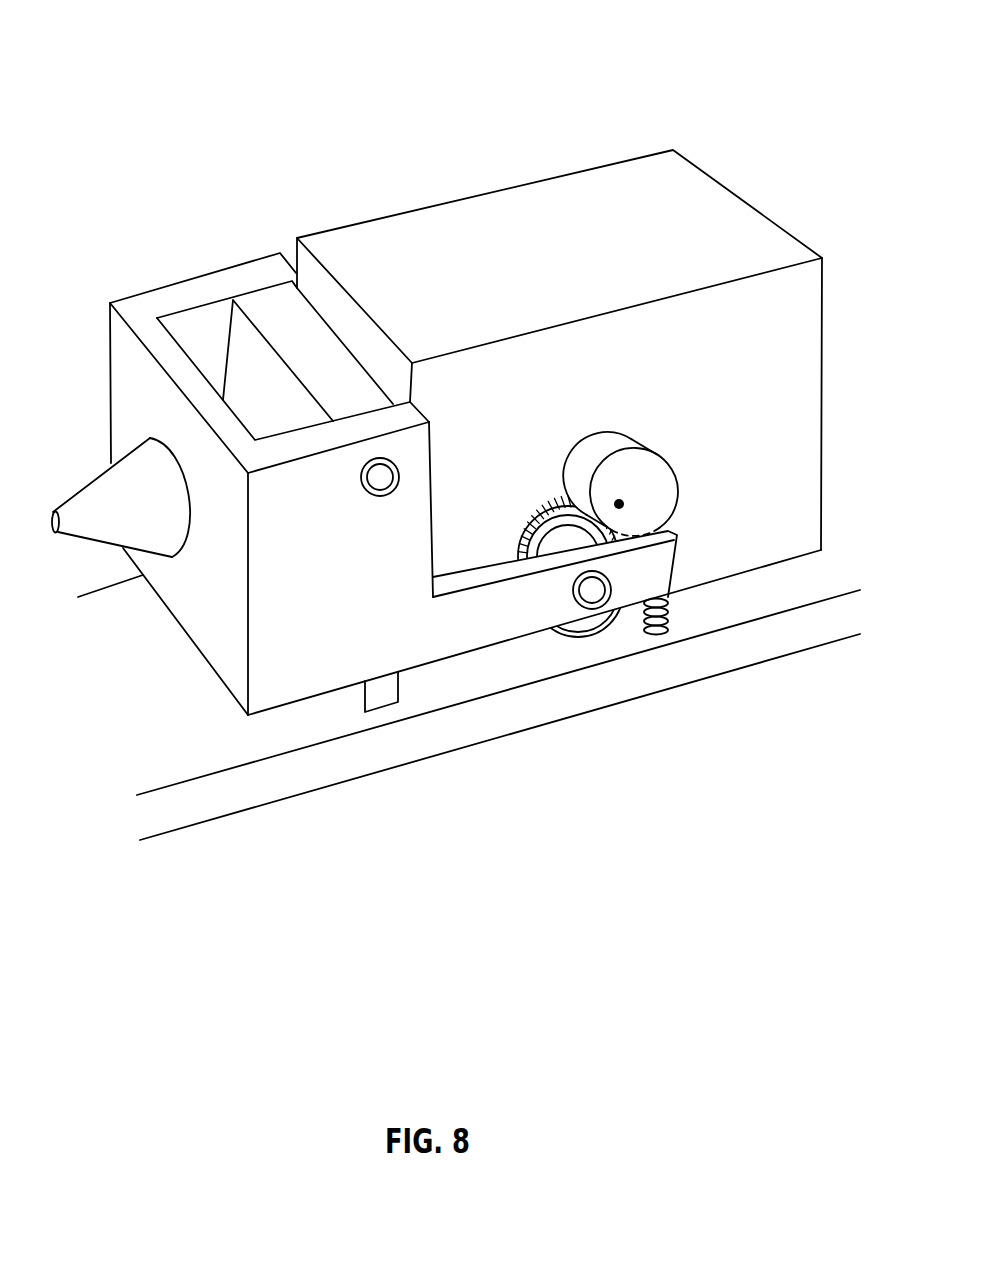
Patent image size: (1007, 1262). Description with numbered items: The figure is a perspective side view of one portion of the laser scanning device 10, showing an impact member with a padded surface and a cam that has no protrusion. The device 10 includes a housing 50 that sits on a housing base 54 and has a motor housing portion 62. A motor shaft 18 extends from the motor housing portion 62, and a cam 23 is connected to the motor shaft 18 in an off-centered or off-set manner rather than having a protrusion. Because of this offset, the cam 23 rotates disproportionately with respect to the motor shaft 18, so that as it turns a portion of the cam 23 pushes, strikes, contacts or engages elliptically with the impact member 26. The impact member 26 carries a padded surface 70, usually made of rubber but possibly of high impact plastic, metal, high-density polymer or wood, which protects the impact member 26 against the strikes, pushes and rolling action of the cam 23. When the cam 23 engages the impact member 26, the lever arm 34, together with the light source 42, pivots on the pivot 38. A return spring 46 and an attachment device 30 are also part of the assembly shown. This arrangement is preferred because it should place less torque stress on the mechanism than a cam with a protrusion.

The laser scanning device 10 is at (738, 120).
The motor shaft 18 is at (622, 504).
The cam 23 is at (627, 468).
The impact member 26 is at (566, 642).
The attachment device 30 is at (592, 594).
The lever arm 34 is at (352, 640).
The pivot 38 is at (380, 483).
The light source 42 is at (150, 537).
The return spring 46 is at (667, 613).
The housing 50 is at (303, 347).
The housing base 54 is at (233, 793).
The motor housing portion 62 is at (763, 328).
The padded surface 70 is at (538, 516).